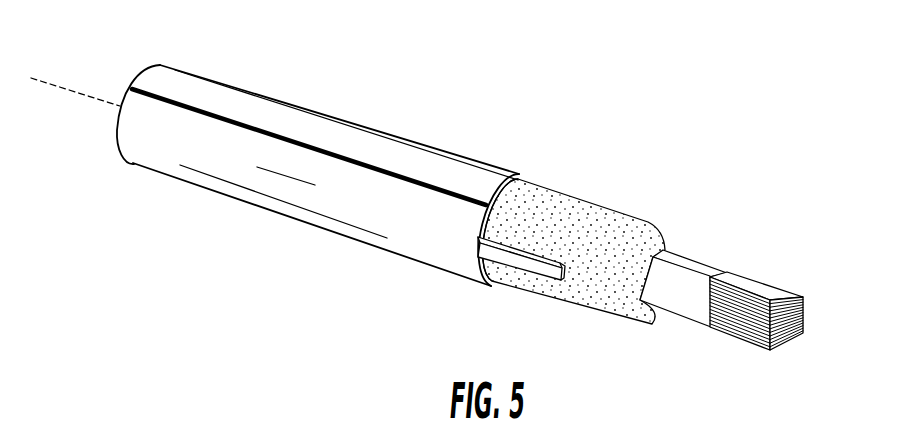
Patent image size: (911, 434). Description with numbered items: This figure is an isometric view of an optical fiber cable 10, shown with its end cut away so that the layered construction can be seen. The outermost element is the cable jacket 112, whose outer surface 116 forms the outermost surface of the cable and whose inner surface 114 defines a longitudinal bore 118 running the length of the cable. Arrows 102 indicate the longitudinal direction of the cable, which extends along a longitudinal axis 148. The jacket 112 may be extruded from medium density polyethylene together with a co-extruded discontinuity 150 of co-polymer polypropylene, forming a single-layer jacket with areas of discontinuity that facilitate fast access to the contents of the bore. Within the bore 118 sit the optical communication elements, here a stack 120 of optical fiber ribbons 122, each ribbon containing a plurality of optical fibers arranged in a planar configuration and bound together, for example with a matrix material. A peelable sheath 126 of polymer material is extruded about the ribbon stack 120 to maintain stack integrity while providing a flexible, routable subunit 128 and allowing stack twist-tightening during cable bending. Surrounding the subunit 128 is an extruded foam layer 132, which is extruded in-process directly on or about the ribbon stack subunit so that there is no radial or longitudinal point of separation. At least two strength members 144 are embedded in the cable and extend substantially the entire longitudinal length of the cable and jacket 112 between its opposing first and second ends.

The catheter assembly 10 is at (563, 93).
The longitudinal direction arrows 102 is at (204, 72).
The cable jacket 112 is at (318, 160).
The inner surface 114 is at (492, 272).
The outer surface 116 is at (382, 143).
The longitudinal bore 118 is at (518, 195).
The stack 120 is at (793, 348).
The optical fiber ribbon 122 is at (805, 333).
The sheath 126 is at (683, 307).
The subunit 128 is at (758, 323).
The foam layer 132 is at (577, 285).
The strength member 144 is at (497, 256).
The longitudinal axis 148 is at (91, 93).
The discontinuity 150 is at (487, 199).